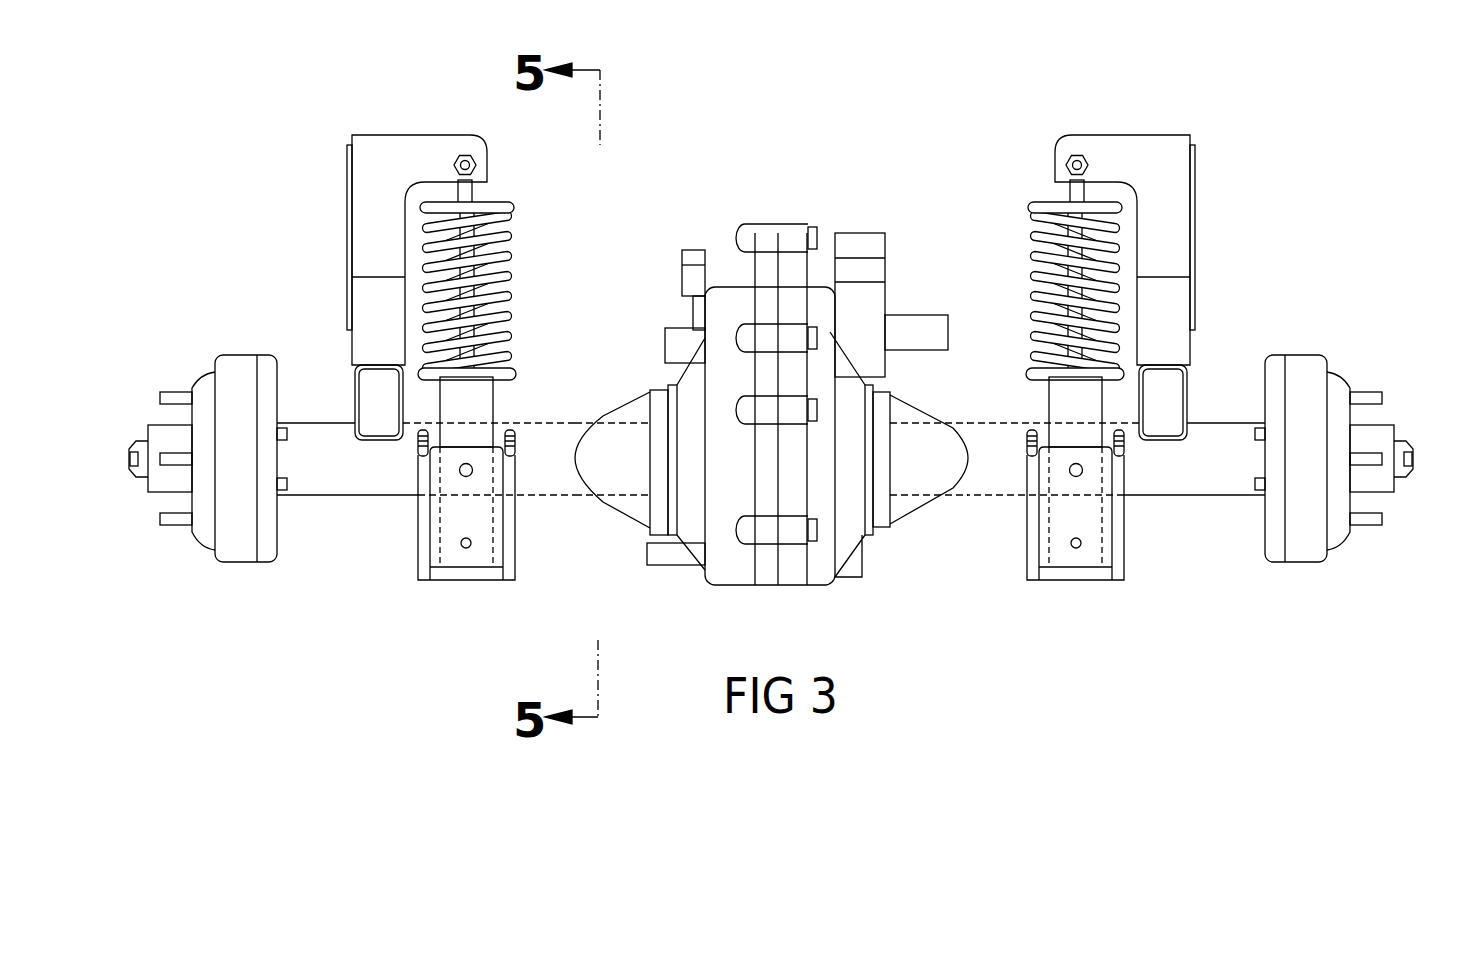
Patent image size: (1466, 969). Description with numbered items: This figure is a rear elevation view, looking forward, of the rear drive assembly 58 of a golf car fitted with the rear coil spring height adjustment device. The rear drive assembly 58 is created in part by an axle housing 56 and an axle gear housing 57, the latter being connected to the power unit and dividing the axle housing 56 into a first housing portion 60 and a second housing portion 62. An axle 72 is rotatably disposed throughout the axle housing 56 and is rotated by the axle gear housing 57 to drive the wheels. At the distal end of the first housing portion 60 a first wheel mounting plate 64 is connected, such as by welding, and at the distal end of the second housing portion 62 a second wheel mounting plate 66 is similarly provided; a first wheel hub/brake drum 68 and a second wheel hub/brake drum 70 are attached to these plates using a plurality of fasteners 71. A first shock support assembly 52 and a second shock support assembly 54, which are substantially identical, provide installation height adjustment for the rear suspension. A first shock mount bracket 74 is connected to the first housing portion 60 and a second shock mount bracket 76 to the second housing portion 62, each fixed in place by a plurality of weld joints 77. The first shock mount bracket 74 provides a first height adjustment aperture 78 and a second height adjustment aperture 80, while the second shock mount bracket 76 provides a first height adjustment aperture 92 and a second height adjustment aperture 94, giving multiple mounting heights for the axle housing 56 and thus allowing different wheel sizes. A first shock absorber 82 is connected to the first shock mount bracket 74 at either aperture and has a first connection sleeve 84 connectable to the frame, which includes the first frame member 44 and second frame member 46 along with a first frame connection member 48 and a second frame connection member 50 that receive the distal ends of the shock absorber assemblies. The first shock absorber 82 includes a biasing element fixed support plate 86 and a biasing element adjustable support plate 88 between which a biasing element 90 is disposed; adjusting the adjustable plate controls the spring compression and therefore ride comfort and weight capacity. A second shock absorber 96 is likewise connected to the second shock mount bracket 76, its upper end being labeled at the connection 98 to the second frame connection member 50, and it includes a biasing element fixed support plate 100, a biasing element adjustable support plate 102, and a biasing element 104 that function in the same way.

The first frame member 44 is at (1165, 440).
The second frame member 46 is at (345, 412).
The first frame connection member 48 is at (1120, 152).
The second frame connection member 50 is at (420, 147).
The first shock support assembly 52 is at (1005, 280).
The second shock support assembly 54 is at (520, 253).
The axle housing 56 is at (991, 502).
The axle gear housing 57 is at (768, 565).
The rear drive assembly 58 is at (936, 152).
The first housing portion 60 is at (968, 490).
The second housing portion 62 is at (580, 500).
The first wheel mounting plate 64 is at (1263, 540).
The second wheel mounting plate 66 is at (277, 520).
The first wheel hub/brake drum 68 is at (1298, 367).
The second wheel hub/brake drum 70 is at (238, 552).
The fasteners 71 is at (1260, 433).
The axle 72 is at (1415, 465).
The first shock mount bracket 74 is at (1030, 573).
The second shock mount bracket 76 is at (418, 573).
The weld joints 77 is at (420, 442).
The first height adjustment aperture 78 is at (1077, 478).
The second height adjustment aperture 80 is at (1077, 553).
The first shock absorber 82 is at (1067, 402).
The first connection sleeve 84 is at (1063, 177).
The biasing element fixed support plate 86 is at (1037, 373).
The biasing element adjustable support plate 88 is at (1040, 210).
The biasing element 90 is at (1038, 330).
The first height adjustment aperture 92 is at (467, 478).
The second height adjustment aperture 94 is at (467, 553).
The second shock absorber 96 is at (453, 405).
The left mounting bolt 98 is at (485, 160).
The biasing element fixed support plate 100 is at (512, 376).
The biasing element adjustable support plate 102 is at (512, 207).
The biasing element 104 is at (517, 330).